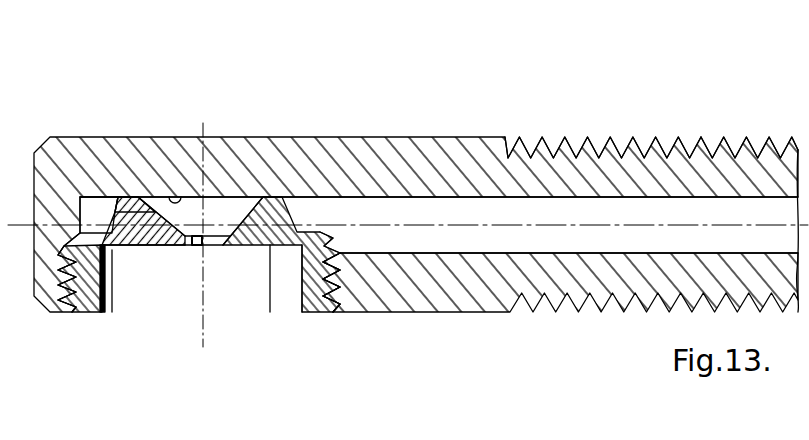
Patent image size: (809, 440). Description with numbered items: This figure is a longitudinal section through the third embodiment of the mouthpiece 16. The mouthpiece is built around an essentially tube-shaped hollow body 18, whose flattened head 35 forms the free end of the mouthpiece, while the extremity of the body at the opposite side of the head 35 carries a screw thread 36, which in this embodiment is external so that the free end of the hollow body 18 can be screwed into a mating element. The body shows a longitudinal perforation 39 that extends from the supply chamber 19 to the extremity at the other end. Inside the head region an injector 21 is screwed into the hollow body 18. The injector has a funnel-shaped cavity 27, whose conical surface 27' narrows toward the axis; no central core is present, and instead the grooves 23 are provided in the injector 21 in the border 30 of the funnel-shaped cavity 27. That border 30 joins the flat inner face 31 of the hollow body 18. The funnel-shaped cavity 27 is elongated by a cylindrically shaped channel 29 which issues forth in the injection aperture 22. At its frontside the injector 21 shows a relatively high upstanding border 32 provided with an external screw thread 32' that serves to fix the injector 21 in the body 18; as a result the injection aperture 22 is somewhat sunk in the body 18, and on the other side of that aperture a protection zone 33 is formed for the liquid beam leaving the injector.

The mouthpiece 16 is at (540, 130).
The hollow body 18 is at (380, 149).
The supply chamber 19 is at (105, 199).
The injector 21 is at (352, 248).
The injection aperture 22 is at (210, 246).
The grooves 23 is at (130, 198).
The funnel-shaped cavity 27 is at (185, 141).
The conical seat surface 27' is at (179, 151).
The cylindrically shaped channel 29 is at (218, 247).
The border 30 is at (283, 197).
The flat inner face 31 is at (255, 197).
The upstanding border 32 is at (331, 320).
The external screw thread 32' is at (373, 315).
The protection zone 33 is at (164, 285).
The head 35 is at (48, 290).
The screw thread 36 is at (728, 143).
The longitudinal perforation 39 is at (625, 213).